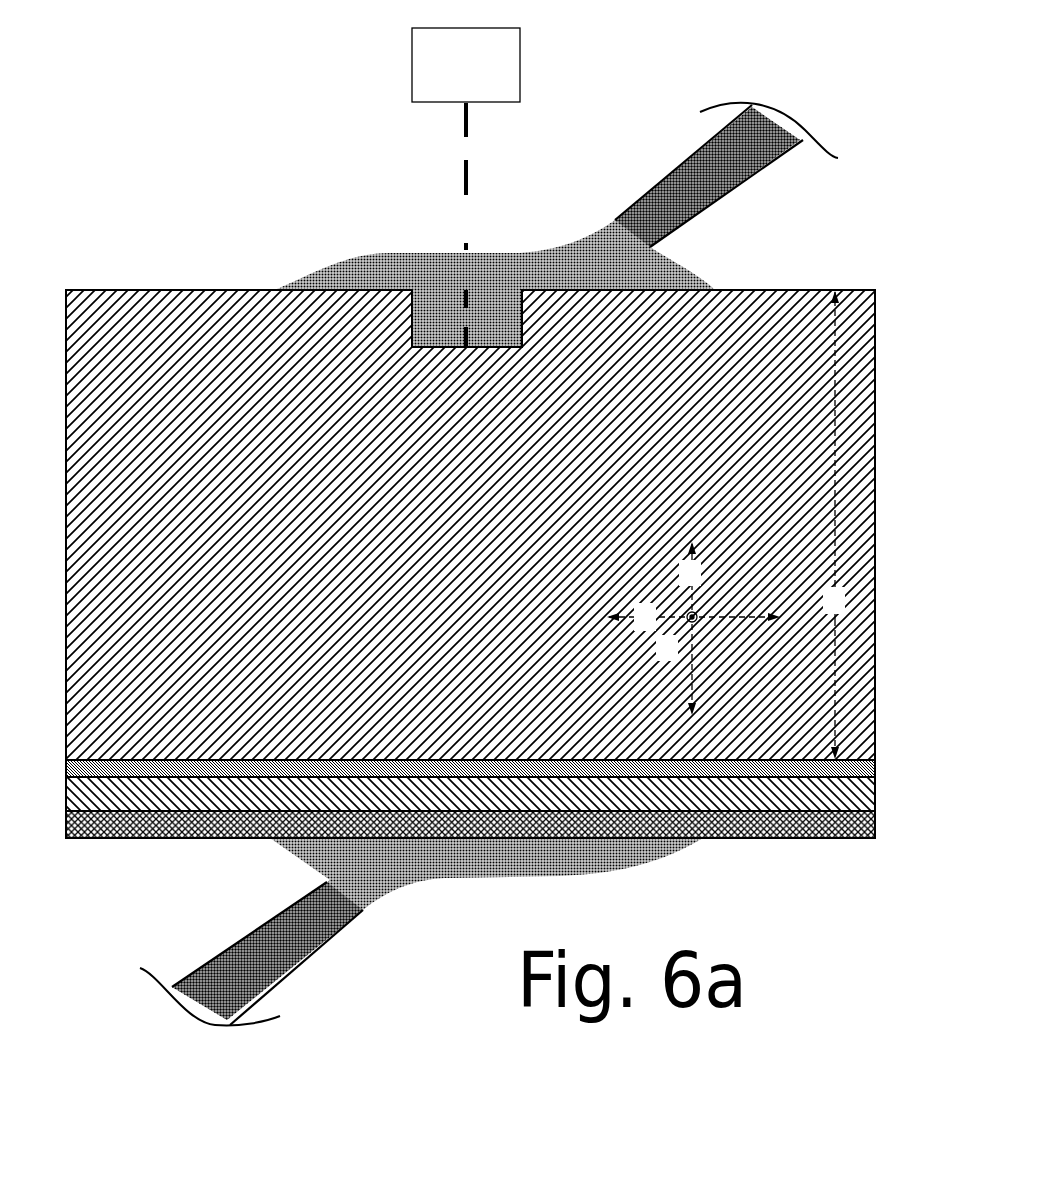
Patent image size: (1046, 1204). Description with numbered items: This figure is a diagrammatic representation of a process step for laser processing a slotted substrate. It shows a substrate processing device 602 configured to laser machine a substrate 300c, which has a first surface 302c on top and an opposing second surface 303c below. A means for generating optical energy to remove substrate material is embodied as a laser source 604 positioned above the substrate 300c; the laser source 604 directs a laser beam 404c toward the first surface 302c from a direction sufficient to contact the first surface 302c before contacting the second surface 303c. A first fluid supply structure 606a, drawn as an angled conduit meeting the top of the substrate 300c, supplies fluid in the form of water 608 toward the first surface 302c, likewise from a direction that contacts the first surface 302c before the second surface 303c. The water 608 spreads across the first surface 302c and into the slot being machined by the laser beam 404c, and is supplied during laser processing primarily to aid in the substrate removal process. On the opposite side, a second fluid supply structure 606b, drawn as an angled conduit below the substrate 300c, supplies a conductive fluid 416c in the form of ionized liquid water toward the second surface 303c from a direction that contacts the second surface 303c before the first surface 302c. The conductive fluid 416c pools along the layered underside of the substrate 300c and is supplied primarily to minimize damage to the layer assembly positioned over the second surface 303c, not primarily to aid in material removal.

The substrate processing device 602 is at (633, 49).
The laser source 604 is at (441, 78).
The laser beam 404c is at (468, 225).
The water 608 is at (620, 278).
The first fluid supply structure 606a is at (669, 173).
The second fluid supply structure 606b is at (304, 964).
The substrate 300c is at (238, 447).
The first surface 302c is at (735, 288).
The second surface 303c is at (748, 771).
The conductive fluid 416c is at (425, 872).